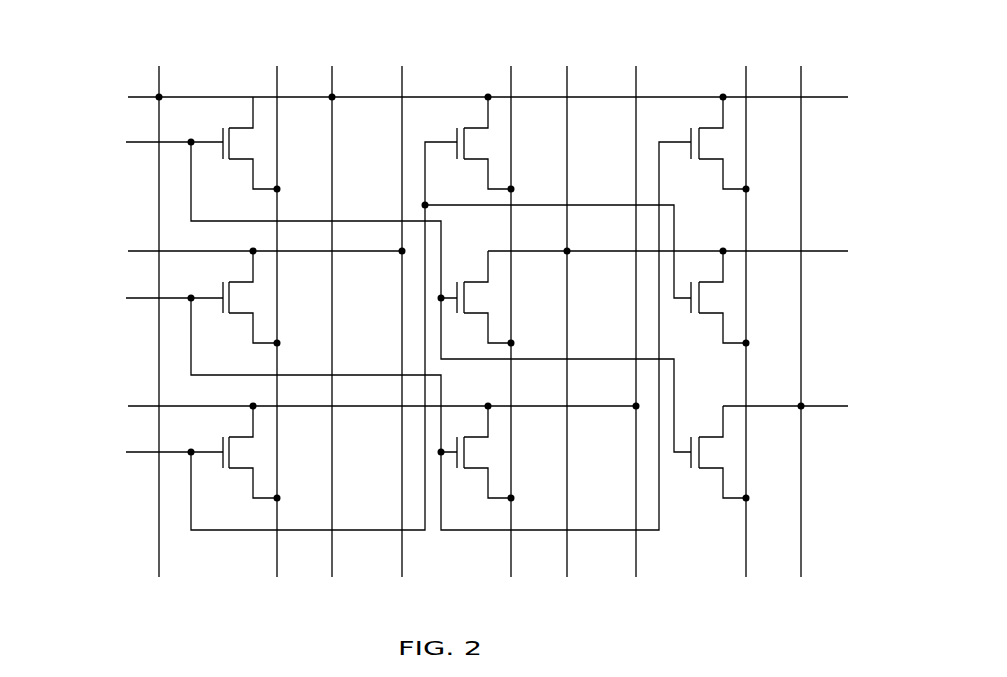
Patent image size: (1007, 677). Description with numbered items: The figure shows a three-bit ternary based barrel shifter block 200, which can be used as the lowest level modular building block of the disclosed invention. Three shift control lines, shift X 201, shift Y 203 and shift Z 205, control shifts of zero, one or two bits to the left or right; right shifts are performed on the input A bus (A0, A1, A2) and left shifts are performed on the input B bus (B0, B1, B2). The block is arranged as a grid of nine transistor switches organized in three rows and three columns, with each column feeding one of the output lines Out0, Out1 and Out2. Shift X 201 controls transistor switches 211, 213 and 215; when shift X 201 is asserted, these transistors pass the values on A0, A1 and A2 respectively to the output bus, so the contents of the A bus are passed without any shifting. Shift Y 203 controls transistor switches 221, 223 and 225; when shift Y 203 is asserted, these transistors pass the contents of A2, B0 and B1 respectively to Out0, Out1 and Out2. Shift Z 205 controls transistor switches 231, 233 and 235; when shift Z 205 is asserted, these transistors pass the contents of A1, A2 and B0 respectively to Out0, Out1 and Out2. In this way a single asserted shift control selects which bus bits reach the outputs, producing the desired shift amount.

The 3-bit ternary based barrel shifter block 200 is at (475, 39).
The SHIFT X control line 201 is at (140, 147).
The SHIFT Y control line 203 is at (140, 302).
The SHIFT Z control line 205 is at (140, 458).
The transistor switch 211 is at (715, 454).
The transistor switch 213 is at (482, 300).
The transistor switch 215 is at (247, 145).
The transistor switch 221 is at (715, 145).
The transistor switch 223 is at (482, 454).
The transistor switch 225 is at (247, 300).
The transistor switch 231 is at (715, 300).
The transistor switch 233 is at (482, 145).
The transistor switch 235 is at (247, 454).